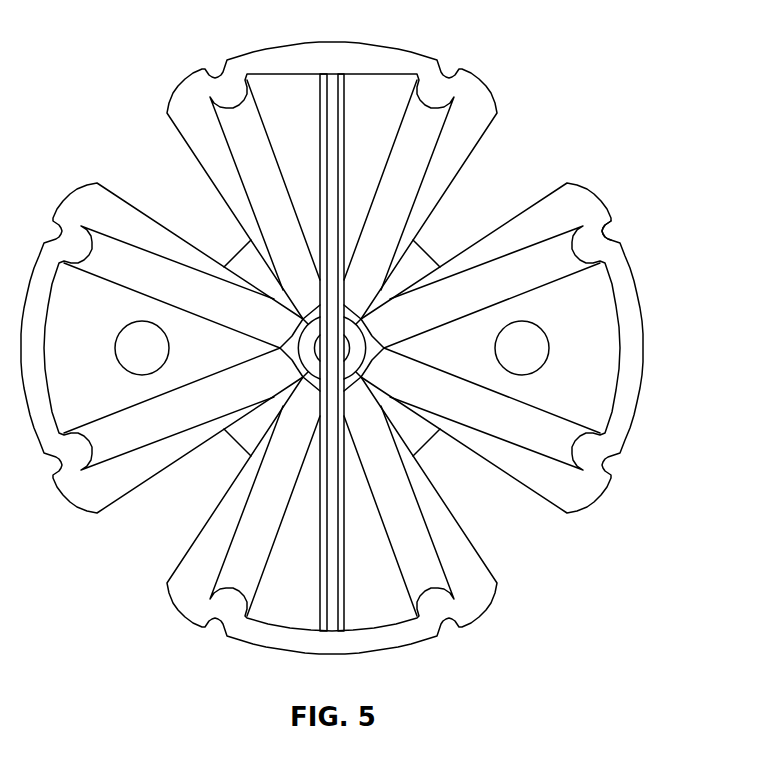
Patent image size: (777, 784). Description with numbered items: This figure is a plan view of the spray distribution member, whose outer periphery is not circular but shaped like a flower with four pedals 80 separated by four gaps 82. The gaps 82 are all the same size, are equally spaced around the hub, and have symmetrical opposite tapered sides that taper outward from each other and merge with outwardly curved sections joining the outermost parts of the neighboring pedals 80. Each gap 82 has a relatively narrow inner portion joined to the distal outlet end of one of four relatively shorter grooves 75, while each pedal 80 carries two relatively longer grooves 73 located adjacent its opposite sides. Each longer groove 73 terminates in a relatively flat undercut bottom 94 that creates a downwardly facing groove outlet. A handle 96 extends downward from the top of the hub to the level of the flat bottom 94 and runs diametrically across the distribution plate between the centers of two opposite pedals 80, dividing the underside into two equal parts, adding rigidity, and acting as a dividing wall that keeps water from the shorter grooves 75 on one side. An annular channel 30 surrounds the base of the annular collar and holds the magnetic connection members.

The annular channel 30 is at (536, 350).
The longer grooves 73 is at (495, 277).
The shorter grooves 75 is at (418, 245).
The pedals 80 is at (388, 82).
The gaps 82 is at (533, 153).
The flat undercut bottom 94 is at (621, 238).
The handle 96 is at (330, 88).